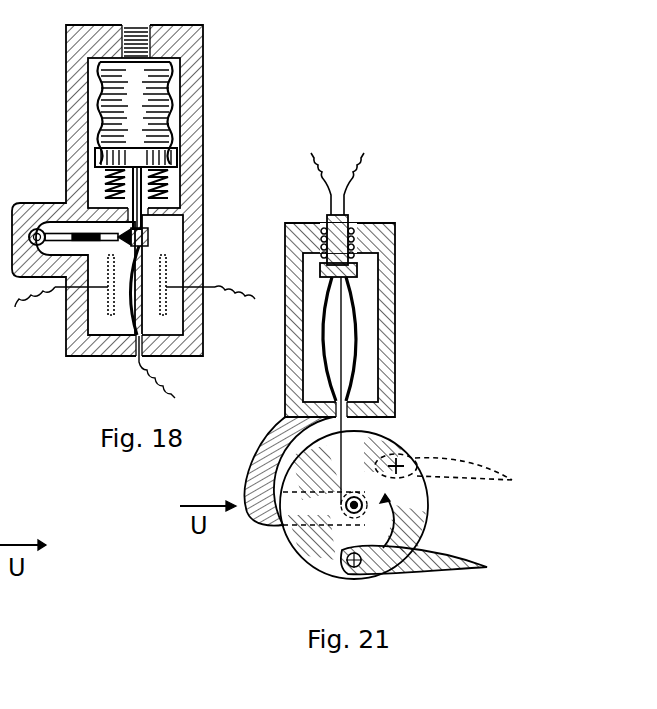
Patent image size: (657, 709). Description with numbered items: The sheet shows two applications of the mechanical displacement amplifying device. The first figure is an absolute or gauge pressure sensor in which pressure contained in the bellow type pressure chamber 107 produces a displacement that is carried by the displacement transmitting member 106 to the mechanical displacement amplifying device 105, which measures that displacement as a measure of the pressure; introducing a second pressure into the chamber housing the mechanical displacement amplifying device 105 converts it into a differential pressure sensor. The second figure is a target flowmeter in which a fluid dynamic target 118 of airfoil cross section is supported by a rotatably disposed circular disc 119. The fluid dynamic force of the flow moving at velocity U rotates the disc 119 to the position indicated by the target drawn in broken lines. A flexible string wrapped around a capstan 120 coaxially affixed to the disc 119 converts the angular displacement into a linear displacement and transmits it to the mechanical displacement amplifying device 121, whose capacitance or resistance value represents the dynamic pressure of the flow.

In FIG. 18, the mechanical displacement amplifying device 105 is at (118, 302).
In FIG. 18, the displacement transmitting member 106 is at (148, 233).
In FIG. 18, the bellow type pressure chamber 107 is at (140, 108).
In FIG. 21, the fluid dynamic target 118 is at (406, 557).
In FIG. 21, the rotatably disposed circular disc 119 is at (300, 528).
In FIG. 21, the capstan 120 is at (330, 540).
In FIG. 21, the mechanical displacement amplifying device 121 is at (350, 338).